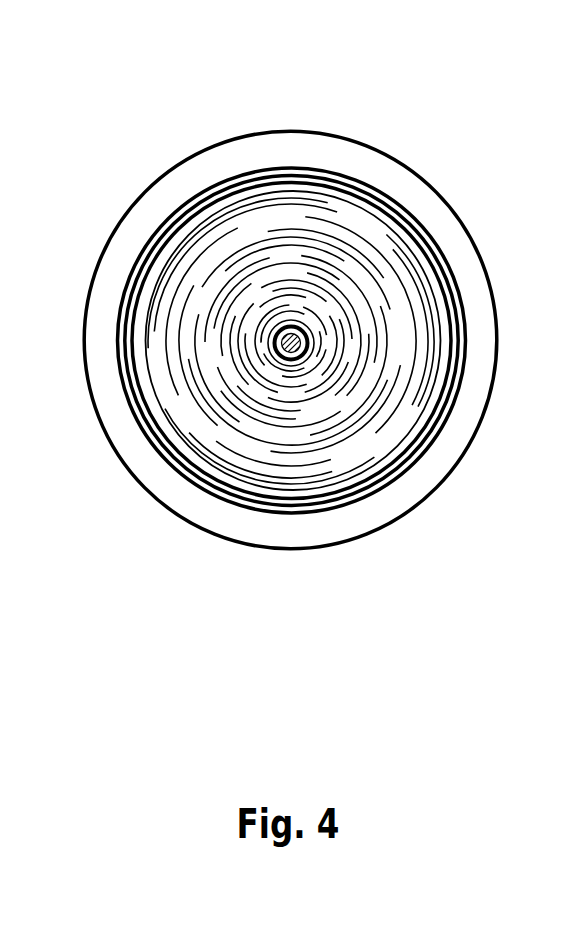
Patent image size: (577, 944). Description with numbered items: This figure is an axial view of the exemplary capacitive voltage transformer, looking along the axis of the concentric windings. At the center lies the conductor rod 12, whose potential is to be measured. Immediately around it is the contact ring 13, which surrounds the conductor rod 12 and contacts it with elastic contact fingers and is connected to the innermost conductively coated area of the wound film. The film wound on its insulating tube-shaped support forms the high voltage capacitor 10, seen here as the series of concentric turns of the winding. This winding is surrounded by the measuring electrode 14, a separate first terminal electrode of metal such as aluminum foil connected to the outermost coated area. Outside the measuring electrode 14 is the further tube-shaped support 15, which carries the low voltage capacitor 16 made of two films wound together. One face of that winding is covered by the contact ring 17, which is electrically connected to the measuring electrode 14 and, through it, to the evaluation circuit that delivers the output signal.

The capacitor 10 is at (203, 260).
The conductor rod 12 is at (292, 325).
The contact ring 13 is at (337, 195).
The measuring electrode 14 is at (158, 436).
The further tube-shaped support 15 is at (246, 510).
The low voltage capacitor 16 is at (334, 550).
The contact ring 17 is at (422, 483).